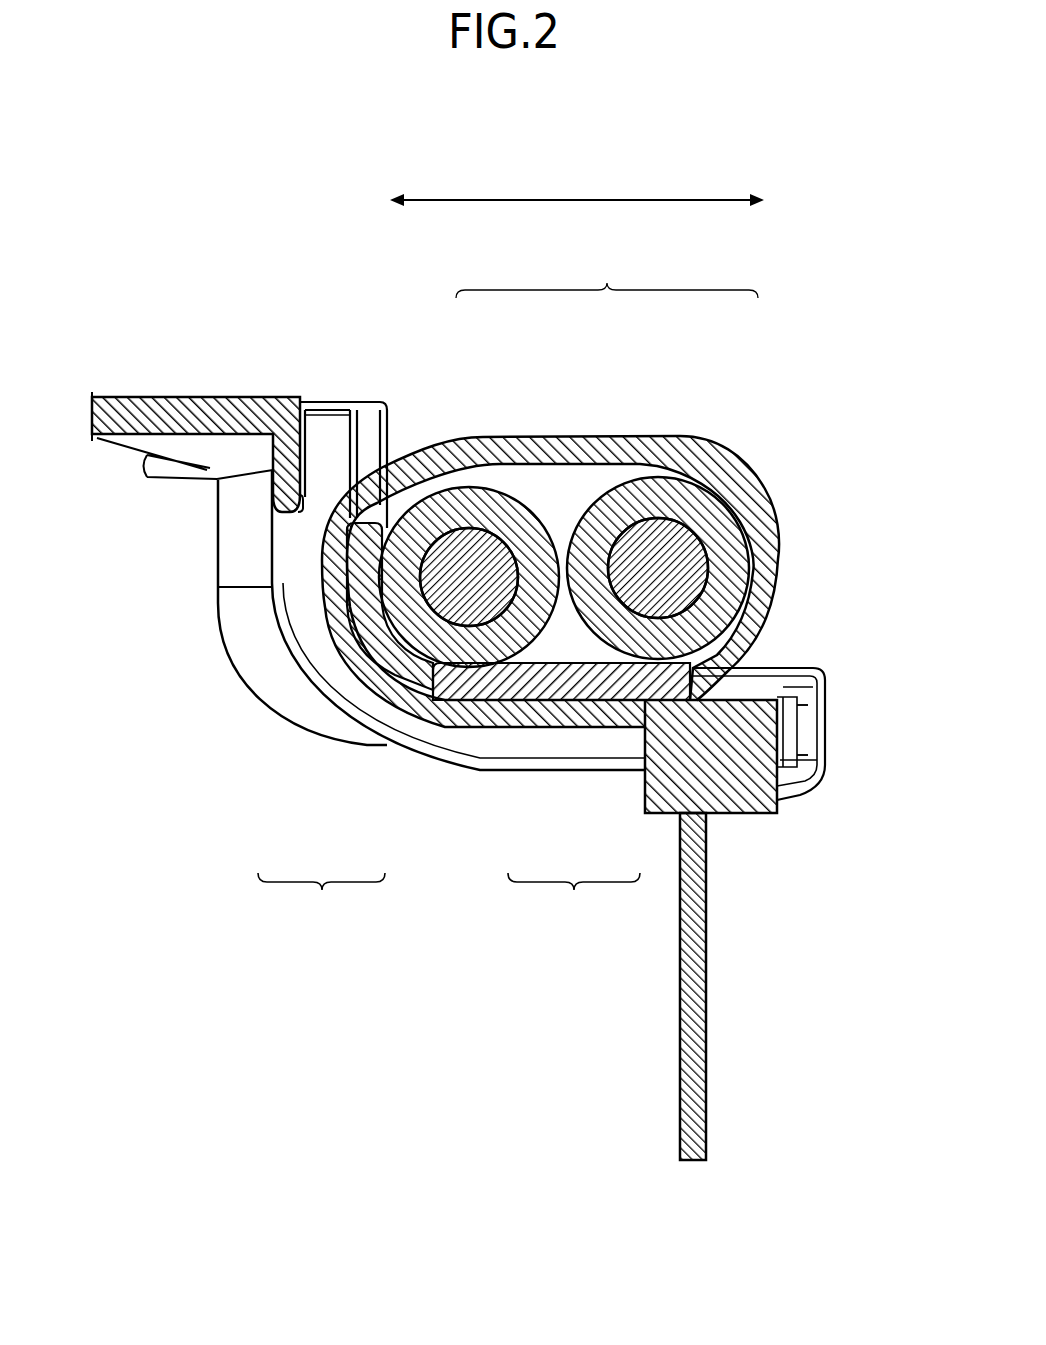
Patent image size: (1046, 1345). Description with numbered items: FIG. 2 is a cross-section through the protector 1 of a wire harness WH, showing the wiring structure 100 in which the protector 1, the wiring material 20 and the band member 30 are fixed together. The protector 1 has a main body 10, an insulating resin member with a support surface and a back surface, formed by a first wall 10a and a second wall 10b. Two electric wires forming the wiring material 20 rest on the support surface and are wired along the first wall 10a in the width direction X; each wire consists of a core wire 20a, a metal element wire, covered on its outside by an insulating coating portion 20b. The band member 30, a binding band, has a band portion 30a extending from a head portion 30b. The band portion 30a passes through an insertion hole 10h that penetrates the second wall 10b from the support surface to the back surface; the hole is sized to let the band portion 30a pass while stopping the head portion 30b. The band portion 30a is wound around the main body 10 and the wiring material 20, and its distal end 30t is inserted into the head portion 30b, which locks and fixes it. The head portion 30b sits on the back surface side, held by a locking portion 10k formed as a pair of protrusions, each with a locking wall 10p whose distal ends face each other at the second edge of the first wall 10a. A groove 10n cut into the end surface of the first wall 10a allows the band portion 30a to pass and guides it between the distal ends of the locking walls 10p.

The protector 1 is at (802, 162).
The wiring structure 100 is at (906, 139).
The wire harness WH is at (310, 204).
The width direction X is at (577, 189).
The main body 10 is at (431, 661).
The first wall 10a is at (537, 680).
The second wall 10b is at (368, 590).
The insertion hole 10h is at (327, 436).
The groove 10n is at (822, 684).
The locking portion 10k is at (830, 743).
The locking wall 10p is at (802, 730).
The wiring material 20 is at (607, 277).
The core wire 20a is at (477, 573).
The insulating coating portion 20b is at (457, 517).
The band member 30 is at (574, 896).
The band portion 30a is at (763, 600).
The head portion 30b is at (707, 753).
The distal end 30t is at (690, 1170).